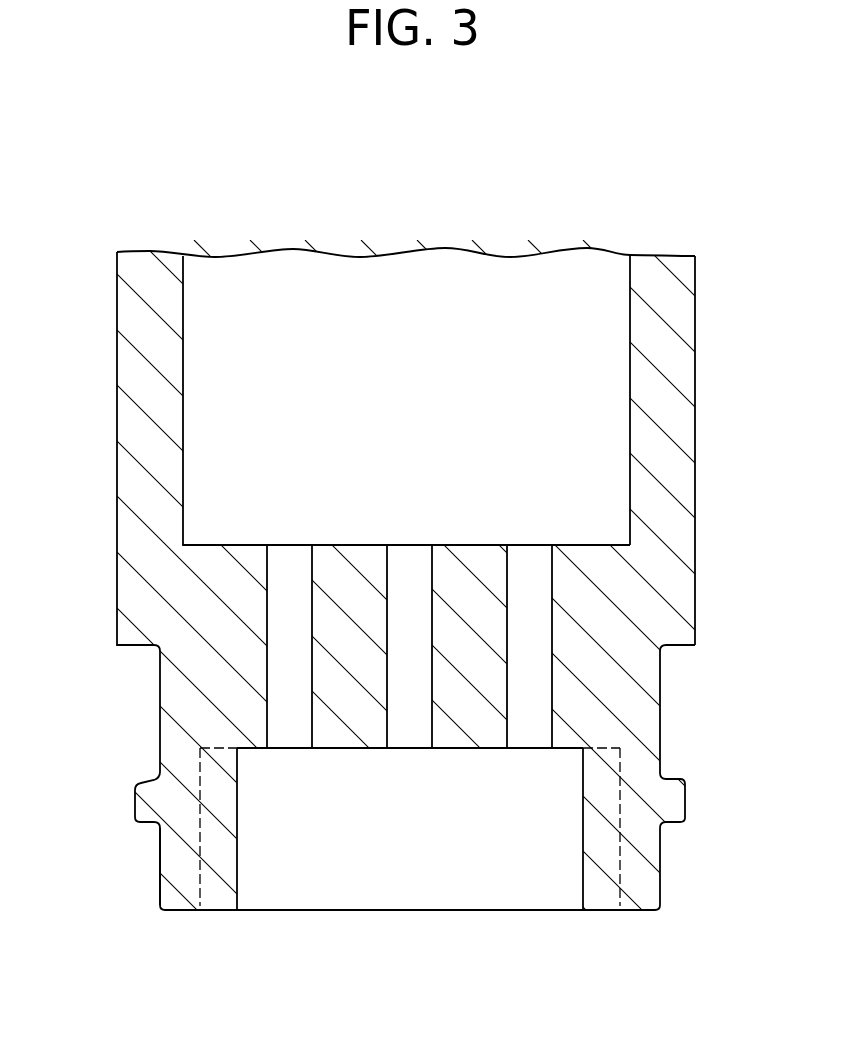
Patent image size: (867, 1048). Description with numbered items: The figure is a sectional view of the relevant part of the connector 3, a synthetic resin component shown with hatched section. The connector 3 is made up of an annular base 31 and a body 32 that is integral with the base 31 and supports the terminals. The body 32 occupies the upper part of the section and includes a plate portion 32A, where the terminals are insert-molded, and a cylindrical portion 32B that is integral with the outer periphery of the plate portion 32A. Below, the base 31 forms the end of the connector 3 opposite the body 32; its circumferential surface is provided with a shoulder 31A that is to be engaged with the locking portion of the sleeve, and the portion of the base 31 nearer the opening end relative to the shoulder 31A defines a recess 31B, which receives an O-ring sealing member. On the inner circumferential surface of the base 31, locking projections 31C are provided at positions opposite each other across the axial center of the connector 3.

The connector 3 is at (120, 197).
The body 32 is at (124, 420).
The plate portion 32A is at (476, 548).
The cylindrical portion 32B is at (682, 316).
The base 31 is at (170, 895).
The shoulder 31A is at (135, 800).
The recess 31B is at (160, 845).
The locking projections 31C is at (226, 862).